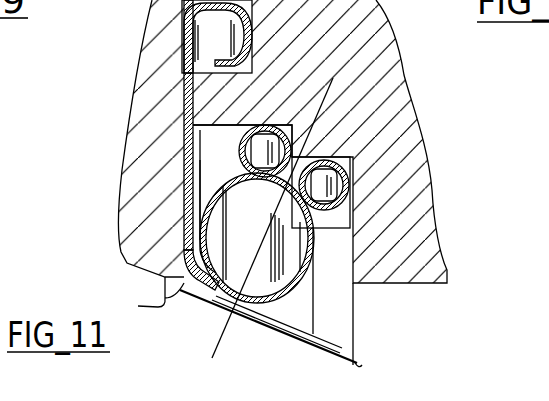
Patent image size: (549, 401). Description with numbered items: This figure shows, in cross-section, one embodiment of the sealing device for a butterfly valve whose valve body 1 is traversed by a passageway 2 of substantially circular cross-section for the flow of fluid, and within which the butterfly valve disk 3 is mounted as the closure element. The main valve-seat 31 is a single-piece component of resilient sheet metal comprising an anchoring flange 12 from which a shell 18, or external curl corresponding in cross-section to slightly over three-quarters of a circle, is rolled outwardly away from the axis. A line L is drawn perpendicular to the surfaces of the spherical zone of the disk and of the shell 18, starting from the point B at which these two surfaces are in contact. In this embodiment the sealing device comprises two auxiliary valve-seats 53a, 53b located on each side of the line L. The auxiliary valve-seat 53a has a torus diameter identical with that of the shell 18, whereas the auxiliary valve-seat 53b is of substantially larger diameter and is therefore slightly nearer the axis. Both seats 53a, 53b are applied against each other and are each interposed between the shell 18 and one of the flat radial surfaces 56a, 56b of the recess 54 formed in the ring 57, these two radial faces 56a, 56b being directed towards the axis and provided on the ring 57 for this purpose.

The valve body 1 is at (150, 192).
The passageway 2 is at (154, 291).
The butterfly valve disk 3 is at (264, 328).
The anchoring flange 12 is at (182, 16).
The shell 18 is at (273, 298).
The main valve-seat 31 is at (183, 100).
The auxiliary valve-seat 53a is at (340, 316).
The auxiliary valve-seat 53b is at (242, 153).
The recess 54 is at (212, 197).
The radial face 56a is at (343, 224).
The radial face 56b is at (292, 128).
The ring 57 is at (363, 45).
The line L is at (227, 333).
The point of contact B is at (233, 305).